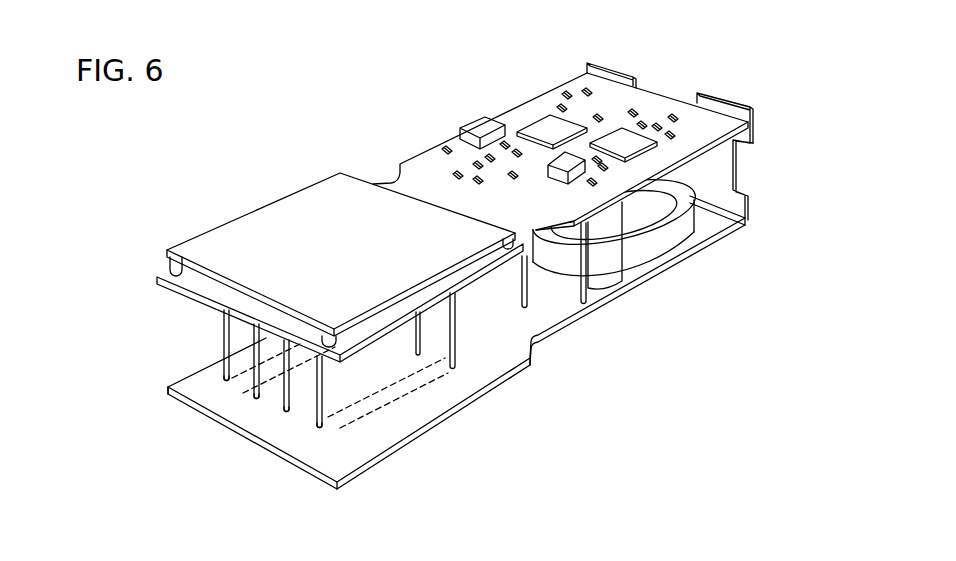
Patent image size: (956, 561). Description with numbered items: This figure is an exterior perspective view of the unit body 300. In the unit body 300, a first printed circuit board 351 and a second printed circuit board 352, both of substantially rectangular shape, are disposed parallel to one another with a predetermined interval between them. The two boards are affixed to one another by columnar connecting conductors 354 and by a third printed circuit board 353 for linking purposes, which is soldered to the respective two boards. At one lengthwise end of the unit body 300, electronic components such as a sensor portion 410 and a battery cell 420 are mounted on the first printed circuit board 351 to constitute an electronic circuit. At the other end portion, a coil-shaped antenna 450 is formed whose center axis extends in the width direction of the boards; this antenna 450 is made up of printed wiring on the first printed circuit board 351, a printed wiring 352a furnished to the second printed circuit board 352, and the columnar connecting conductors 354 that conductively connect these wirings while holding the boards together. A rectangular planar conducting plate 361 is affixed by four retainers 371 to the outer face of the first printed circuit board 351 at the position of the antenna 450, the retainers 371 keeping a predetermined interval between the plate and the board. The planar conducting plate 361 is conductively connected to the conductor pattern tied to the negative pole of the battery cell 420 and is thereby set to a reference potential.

The unit body 300 is at (355, 138).
The first printed circuit board 351 is at (516, 118).
The second printed circuit board 352 is at (577, 310).
The printed wiring 352a is at (367, 407).
The third printed circuit board for linking purposes 353 is at (717, 178).
The columnar connecting conductors 354 is at (319, 427).
The planar conducting plate 361 is at (273, 222).
The retainers 371 is at (165, 257).
The sensor portion 410 is at (478, 127).
The battery cell 420 is at (640, 208).
The antenna 450 is at (453, 380).